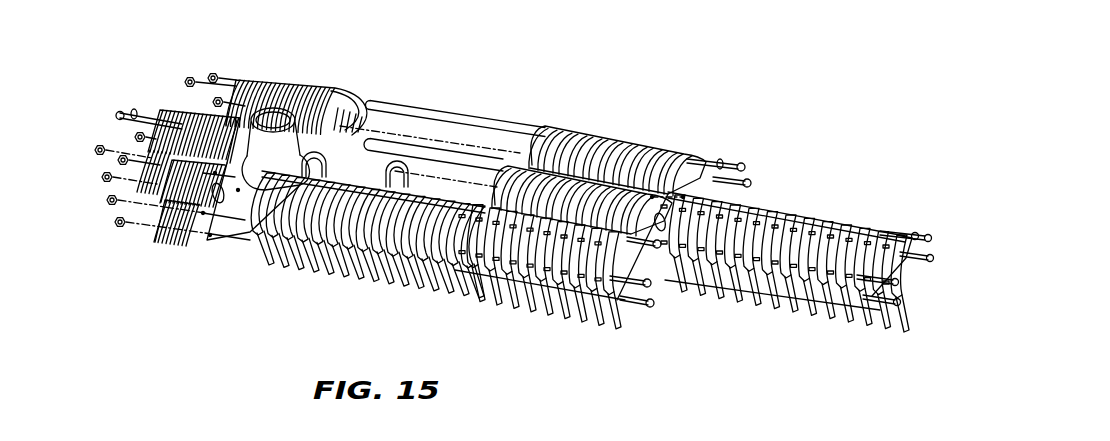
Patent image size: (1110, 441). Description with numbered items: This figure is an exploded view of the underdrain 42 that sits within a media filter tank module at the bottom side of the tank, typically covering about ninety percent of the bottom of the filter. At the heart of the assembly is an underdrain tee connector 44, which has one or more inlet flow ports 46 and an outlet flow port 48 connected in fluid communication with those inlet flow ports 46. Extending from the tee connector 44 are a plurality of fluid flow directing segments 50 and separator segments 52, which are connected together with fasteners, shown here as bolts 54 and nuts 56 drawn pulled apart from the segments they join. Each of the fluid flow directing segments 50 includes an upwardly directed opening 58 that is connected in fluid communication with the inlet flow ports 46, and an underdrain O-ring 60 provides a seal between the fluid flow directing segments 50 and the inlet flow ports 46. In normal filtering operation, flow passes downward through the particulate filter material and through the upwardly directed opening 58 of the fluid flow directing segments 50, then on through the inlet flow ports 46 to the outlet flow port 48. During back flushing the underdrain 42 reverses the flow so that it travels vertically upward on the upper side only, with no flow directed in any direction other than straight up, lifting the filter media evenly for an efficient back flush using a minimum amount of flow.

The underdrain 42 is at (723, 118).
The underdrain tee connector 44 is at (273, 150).
The inlet flow ports 46 is at (243, 168).
The outlet flow port 48 is at (268, 118).
The fluid flow directing segments 50 is at (334, 80).
The separator segments 52 is at (166, 222).
The bolts 54 is at (128, 110).
The nuts 56 is at (218, 75).
The upwardly directed opening 58 is at (615, 137).
The underdrain O-ring 60 is at (398, 165).